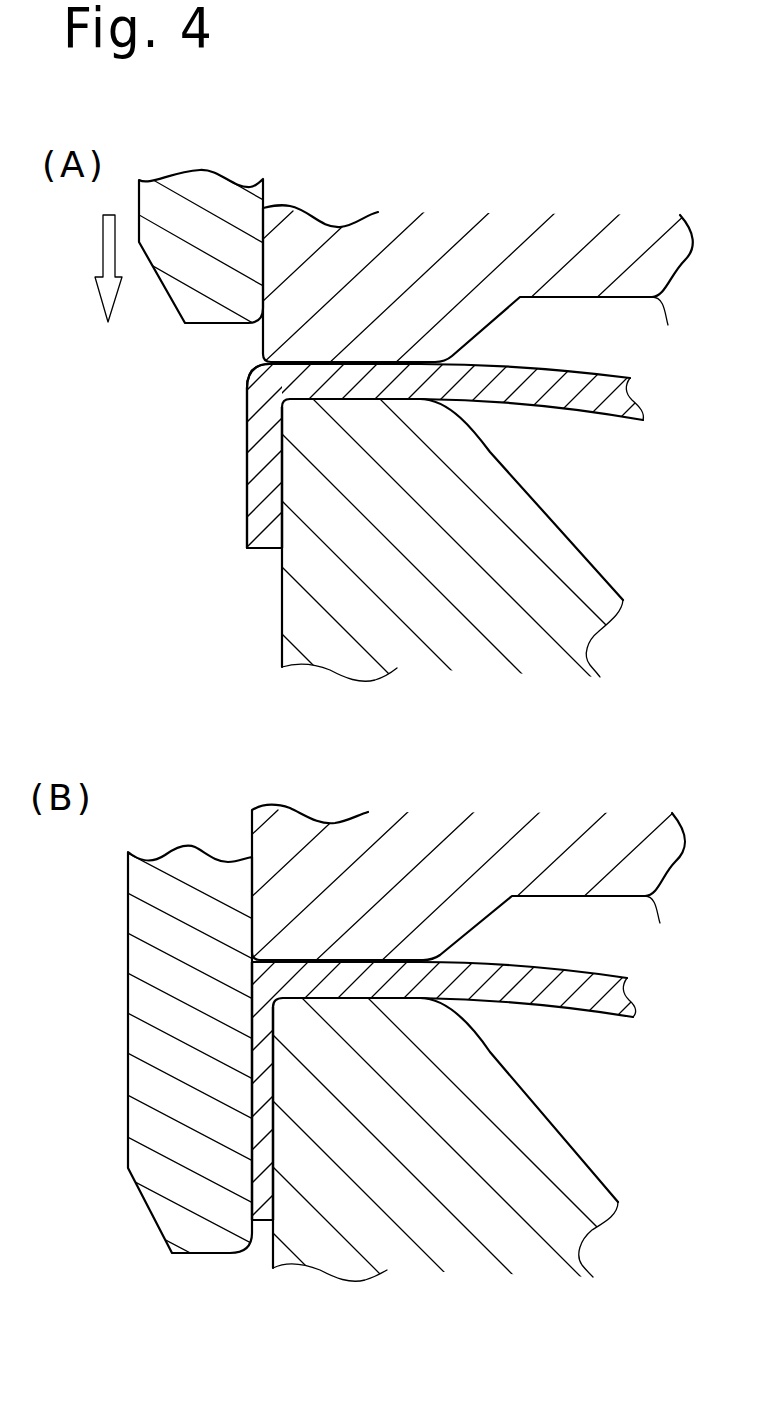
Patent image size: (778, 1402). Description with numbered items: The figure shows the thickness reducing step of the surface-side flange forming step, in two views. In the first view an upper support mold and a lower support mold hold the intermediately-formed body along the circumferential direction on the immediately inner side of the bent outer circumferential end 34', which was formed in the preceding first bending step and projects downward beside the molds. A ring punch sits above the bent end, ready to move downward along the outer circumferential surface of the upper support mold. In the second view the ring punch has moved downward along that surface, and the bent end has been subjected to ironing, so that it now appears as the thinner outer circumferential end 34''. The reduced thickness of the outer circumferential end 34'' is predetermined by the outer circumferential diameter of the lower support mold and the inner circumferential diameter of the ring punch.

The bent outer circumferential end 34' is at (259, 456).
The outer circumferential end of reduced thickness 34'' is at (147, 1091).